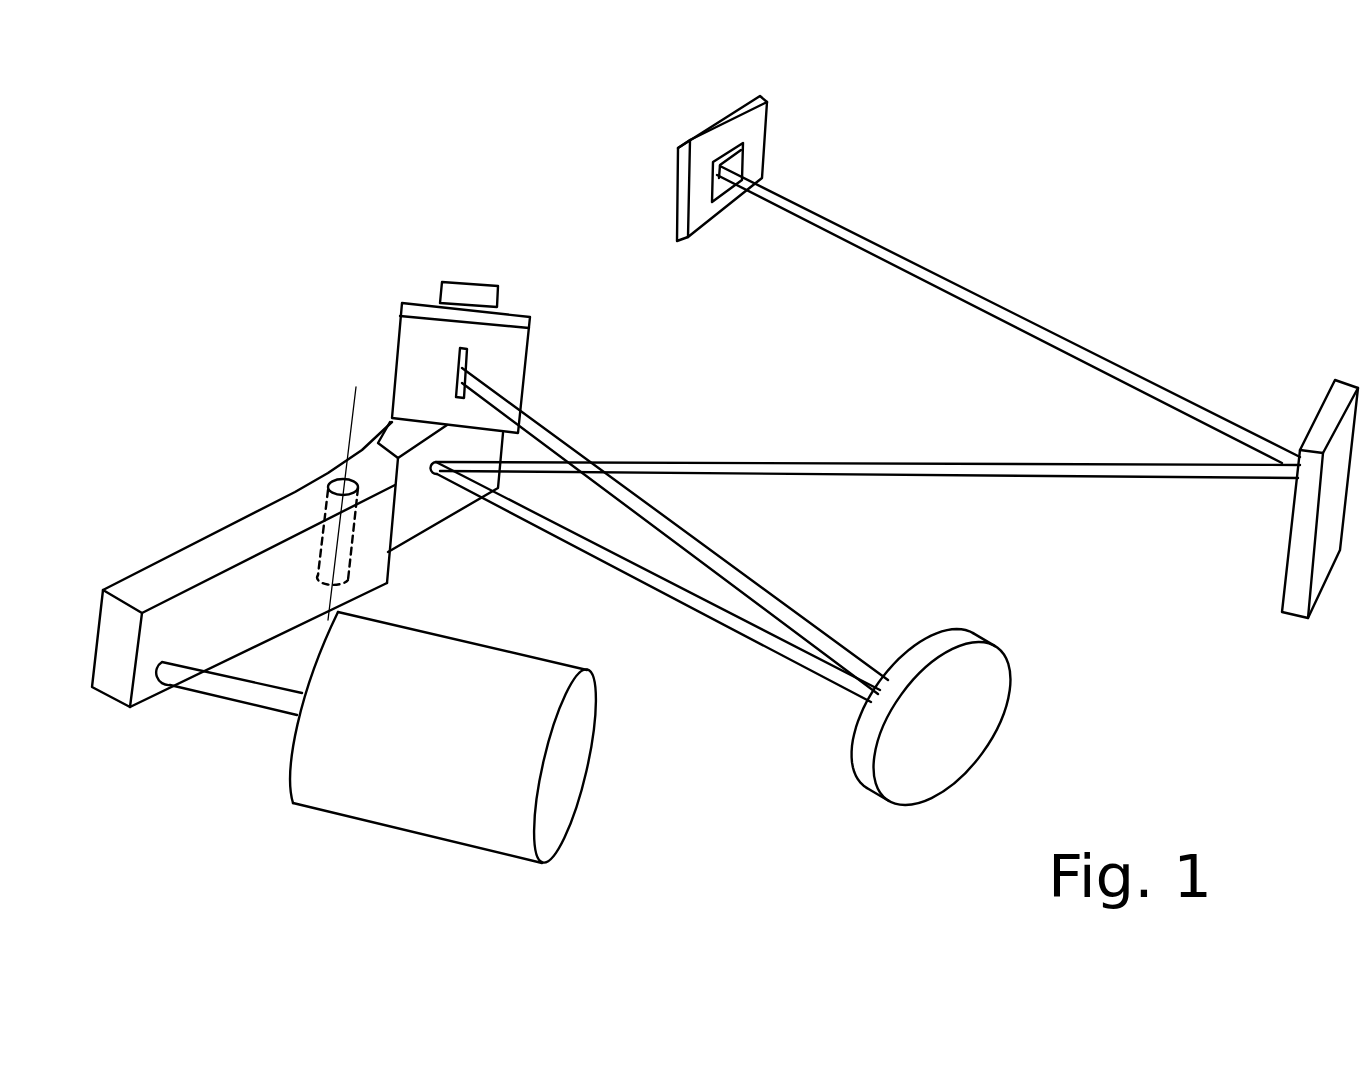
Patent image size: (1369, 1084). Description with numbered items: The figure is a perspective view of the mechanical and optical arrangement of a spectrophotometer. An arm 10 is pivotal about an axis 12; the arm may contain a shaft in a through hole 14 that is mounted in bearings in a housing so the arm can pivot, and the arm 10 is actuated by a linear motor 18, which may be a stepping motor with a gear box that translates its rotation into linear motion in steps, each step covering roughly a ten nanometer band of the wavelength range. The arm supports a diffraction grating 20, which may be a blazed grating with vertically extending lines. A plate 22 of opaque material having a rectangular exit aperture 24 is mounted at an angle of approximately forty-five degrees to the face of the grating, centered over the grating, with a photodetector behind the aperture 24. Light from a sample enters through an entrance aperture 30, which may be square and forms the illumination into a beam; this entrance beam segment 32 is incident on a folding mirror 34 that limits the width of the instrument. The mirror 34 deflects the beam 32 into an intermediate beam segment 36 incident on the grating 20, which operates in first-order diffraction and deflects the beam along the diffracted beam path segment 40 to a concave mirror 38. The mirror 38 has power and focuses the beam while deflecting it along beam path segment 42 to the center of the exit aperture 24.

The arm 10 is at (243, 518).
The axis 12 is at (357, 405).
The through hole 14 is at (328, 478).
The linear motor 18 is at (332, 813).
The diffraction grating 20 is at (407, 510).
The plate 22 is at (506, 349).
The exit aperture 24 is at (467, 349).
The entrance aperture 30 is at (766, 140).
The entrance beam segment 32 is at (915, 262).
The folding mirror 34 is at (1330, 387).
The intermediate beam segment 36 is at (942, 462).
The concave mirror 38 is at (982, 686).
The diffracted beam path segment 40 is at (655, 588).
The beam path segment 42 is at (745, 577).